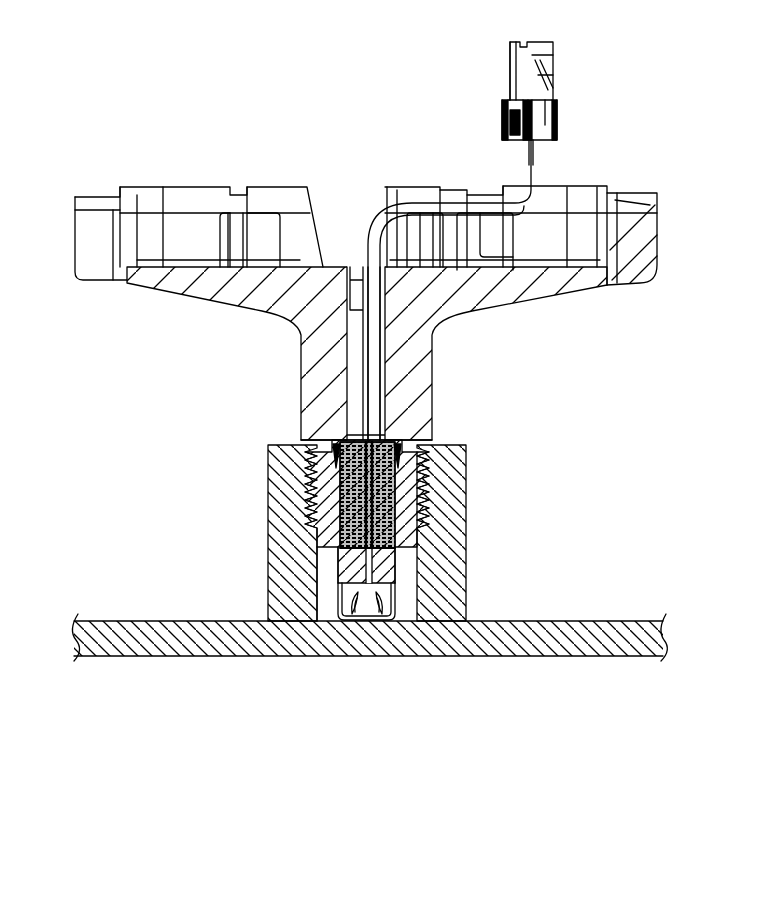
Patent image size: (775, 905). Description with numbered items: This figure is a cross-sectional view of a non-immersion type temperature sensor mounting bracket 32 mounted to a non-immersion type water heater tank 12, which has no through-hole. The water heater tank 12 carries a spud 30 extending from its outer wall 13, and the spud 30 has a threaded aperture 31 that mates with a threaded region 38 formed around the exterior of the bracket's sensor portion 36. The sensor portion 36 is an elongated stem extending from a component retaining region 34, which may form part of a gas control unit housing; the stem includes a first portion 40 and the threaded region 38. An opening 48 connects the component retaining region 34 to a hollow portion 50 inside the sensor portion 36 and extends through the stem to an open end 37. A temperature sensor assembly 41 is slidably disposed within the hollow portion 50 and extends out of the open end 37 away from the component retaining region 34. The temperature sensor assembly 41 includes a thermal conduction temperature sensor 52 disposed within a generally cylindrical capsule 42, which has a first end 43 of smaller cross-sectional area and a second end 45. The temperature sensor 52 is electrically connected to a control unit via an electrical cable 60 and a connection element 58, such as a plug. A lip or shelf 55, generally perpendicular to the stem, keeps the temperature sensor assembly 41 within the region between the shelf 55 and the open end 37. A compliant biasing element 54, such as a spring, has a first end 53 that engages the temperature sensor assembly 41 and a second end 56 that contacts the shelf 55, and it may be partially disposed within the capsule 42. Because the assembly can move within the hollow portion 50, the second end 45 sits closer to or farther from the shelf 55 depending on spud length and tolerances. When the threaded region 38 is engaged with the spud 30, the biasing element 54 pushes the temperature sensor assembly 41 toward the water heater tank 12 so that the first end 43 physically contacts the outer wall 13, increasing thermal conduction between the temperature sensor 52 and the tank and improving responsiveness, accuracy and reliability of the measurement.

The water heater tank 12 is at (532, 643).
The outer wall 13 is at (582, 621).
The water heater spud 30 is at (457, 500).
The threaded aperture 31 is at (400, 497).
The temperature sensor mounting bracket 32 is at (659, 74).
The component retaining region 34 is at (207, 221).
The sensor portion 36 is at (258, 381).
The open end 37 is at (317, 563).
The threaded region 38 is at (308, 470).
The first portion 40 is at (432, 371).
The temperature sensor assembly 41 is at (336, 602).
The capsule 42 is at (378, 606).
The first end 43 is at (353, 621).
The second end 45 is at (400, 530).
The opening 48 is at (357, 267).
The hollow portion 50 is at (403, 475).
The temperature sensor 52 is at (405, 571).
The first end of biasing element 53 is at (400, 553).
The biasing element 54 is at (352, 485).
The shelf 55 is at (340, 447).
The second end of biasing element 56 is at (398, 450).
The connection element 58 is at (557, 122).
The electrical cable 60 is at (350, 572).